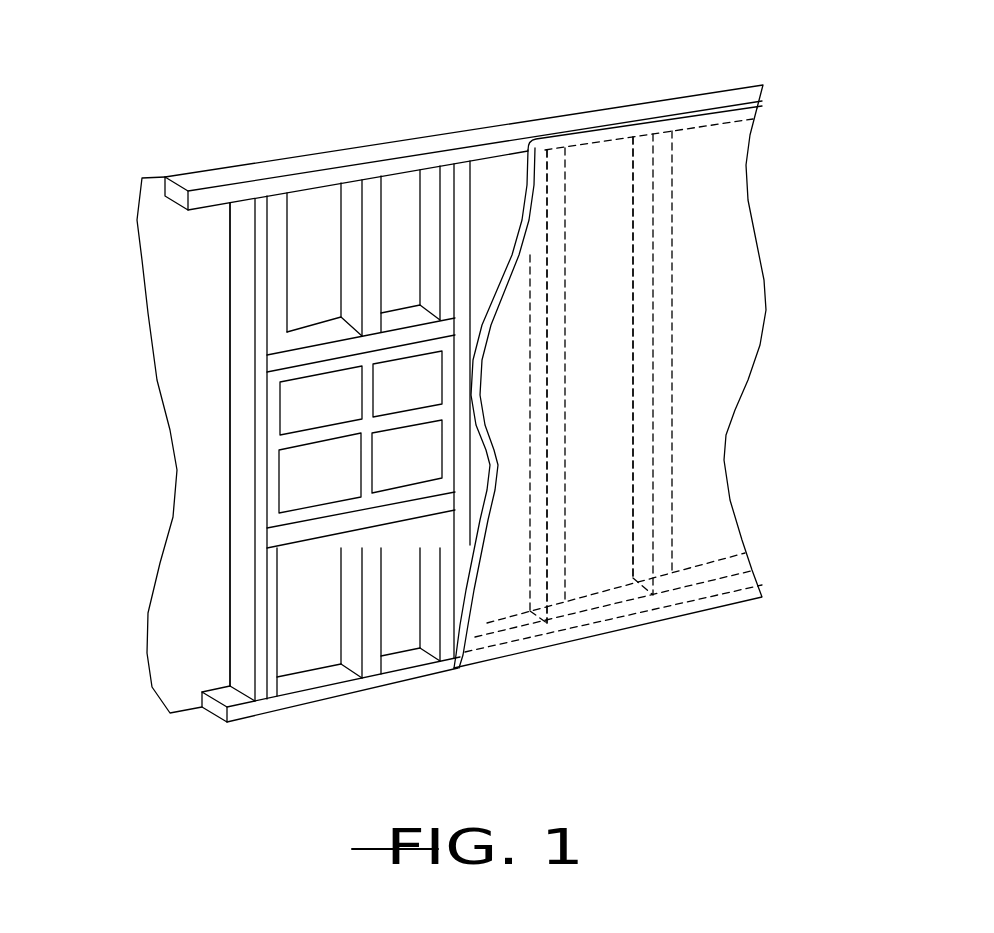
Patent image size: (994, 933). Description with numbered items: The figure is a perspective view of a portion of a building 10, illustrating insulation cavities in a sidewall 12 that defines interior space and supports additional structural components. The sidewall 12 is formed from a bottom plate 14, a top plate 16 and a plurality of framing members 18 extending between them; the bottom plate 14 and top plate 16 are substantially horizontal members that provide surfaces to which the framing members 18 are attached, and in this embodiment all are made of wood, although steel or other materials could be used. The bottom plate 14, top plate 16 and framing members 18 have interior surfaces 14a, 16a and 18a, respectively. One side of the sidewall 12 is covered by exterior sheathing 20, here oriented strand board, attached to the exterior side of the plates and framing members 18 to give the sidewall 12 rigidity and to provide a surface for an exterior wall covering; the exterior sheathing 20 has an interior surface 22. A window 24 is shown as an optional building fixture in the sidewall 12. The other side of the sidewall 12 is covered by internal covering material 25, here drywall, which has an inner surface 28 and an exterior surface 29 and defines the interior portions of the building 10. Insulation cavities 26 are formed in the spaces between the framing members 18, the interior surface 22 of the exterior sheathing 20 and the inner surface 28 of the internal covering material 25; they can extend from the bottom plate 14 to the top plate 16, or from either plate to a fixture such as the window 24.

The building 10 is at (210, 128).
The sidewall 12 is at (426, 132).
The bottom plate 14 is at (633, 612).
The interior surface of the bottom plate 14a is at (497, 628).
The top plate 16 is at (592, 112).
The interior surface of the top plate 16a is at (488, 178).
The framing members 18 is at (380, 236).
The interior surfaces of the framing members 18a is at (232, 366).
The exterior sheathing 20 is at (143, 357).
The interior surface of the exterior sheathing 22 is at (340, 413).
The window 24 is at (327, 542).
The internal covering material 25 is at (580, 157).
The insulation cavities 26 is at (363, 301).
The inner surface of the internal covering material 28 is at (640, 165).
The exterior surface of the internal covering material 29 is at (483, 605).